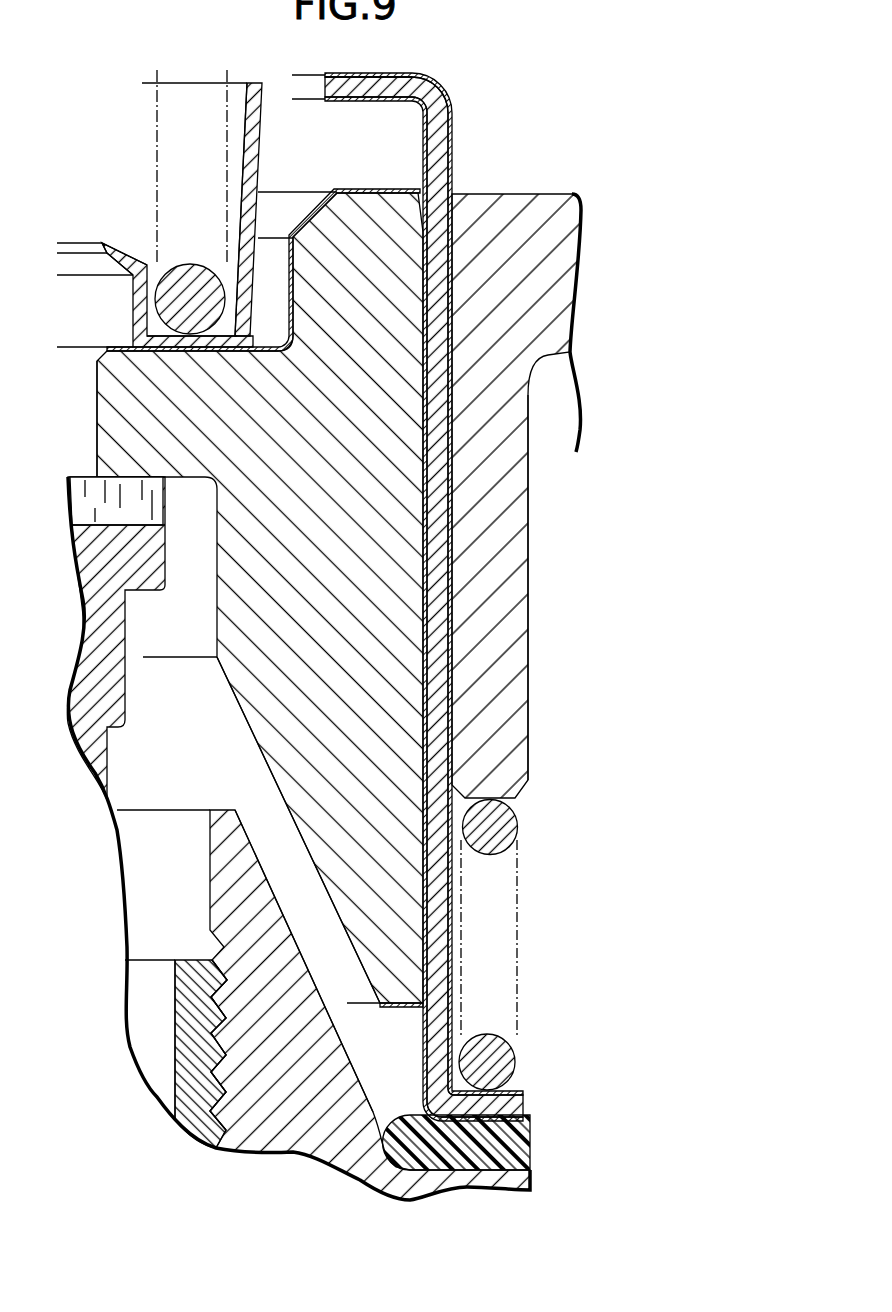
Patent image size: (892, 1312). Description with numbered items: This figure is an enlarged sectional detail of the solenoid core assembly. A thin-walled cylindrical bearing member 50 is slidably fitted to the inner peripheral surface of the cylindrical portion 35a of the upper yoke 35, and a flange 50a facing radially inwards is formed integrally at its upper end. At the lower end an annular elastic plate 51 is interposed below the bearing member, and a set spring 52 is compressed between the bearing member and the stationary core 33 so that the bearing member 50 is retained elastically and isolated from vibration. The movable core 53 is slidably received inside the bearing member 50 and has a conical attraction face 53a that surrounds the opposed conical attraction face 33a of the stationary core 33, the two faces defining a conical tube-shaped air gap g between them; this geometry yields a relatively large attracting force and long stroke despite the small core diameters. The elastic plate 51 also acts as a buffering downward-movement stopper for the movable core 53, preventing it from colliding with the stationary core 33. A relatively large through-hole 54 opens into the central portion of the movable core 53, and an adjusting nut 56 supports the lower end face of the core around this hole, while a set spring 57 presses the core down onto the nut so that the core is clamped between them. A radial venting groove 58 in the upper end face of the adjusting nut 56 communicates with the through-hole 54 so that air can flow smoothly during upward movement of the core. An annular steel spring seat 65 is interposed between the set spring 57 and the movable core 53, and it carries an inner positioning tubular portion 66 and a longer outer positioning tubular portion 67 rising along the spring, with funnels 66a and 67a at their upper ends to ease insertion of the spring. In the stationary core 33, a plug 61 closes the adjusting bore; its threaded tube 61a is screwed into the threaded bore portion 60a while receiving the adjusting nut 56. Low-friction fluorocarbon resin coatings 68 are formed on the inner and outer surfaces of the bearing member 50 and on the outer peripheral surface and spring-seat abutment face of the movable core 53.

The flange 50a is at (387, 73).
The funnel 67a is at (240, 173).
The outer positioning tubular portion 67 is at (253, 152).
The movable core 53 is at (382, 217).
The upper yoke 35 is at (502, 207).
The funnel 66a is at (120, 257).
The set spring 57 is at (192, 280).
The inner positioning tubular portion 66 is at (133, 310).
The through-hole 54 is at (97, 432).
The spring seat 65 is at (183, 343).
The low-friction material coating 68 is at (256, 353).
The radial venting groove 58 is at (113, 522).
The adjusting nut 56 is at (113, 633).
The cylindrical portion 35a is at (510, 610).
The bearing member 50 is at (452, 670).
The set spring 52 is at (497, 833).
The attraction face 53a is at (235, 687).
The air gap g is at (290, 870).
The threaded tube 61a is at (190, 973).
The stationary core 33 is at (290, 977).
The threaded bore portion 60a is at (188, 1018).
The attraction face 33a is at (343, 1030).
The elastic plate 51 is at (497, 1145).
The plug 61 is at (193, 1121).